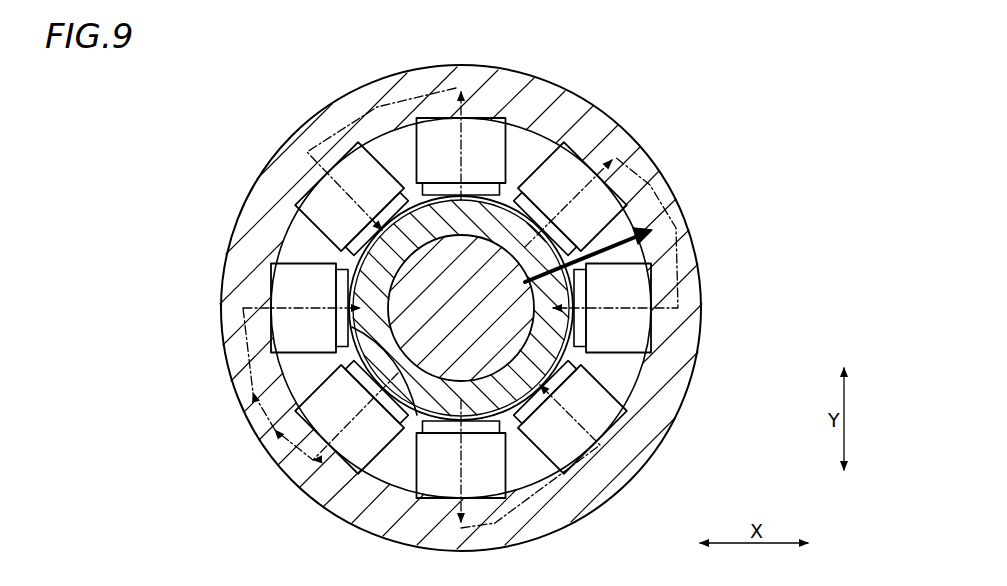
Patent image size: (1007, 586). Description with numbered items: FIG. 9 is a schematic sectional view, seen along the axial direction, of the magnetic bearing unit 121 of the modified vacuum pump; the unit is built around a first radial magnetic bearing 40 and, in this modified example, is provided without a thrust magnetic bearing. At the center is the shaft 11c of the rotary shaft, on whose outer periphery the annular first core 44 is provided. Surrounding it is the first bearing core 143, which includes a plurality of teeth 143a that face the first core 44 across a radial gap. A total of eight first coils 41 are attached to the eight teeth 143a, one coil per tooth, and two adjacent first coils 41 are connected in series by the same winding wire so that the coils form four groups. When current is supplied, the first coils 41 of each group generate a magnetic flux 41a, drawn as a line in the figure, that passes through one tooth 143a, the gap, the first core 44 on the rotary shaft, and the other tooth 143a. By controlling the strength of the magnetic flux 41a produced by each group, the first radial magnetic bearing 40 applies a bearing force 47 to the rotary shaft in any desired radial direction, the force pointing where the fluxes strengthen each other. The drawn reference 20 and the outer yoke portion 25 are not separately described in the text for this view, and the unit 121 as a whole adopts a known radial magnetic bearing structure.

The magnetic bearing unit 121 is at (238, 138).
The drive device 20 is at (406, 308).
The stator yoke 25 is at (228, 191).
The first radial magnetic bearing 40 is at (210, 233).
The first coil 41 is at (272, 290).
The magnetic flux 41a is at (660, 258).
The first core 44 is at (508, 230).
The bearing force 47 is at (655, 228).
The first bearing core 143 is at (243, 322).
The tooth 143a is at (340, 364).
The shaft 11c is at (483, 322).